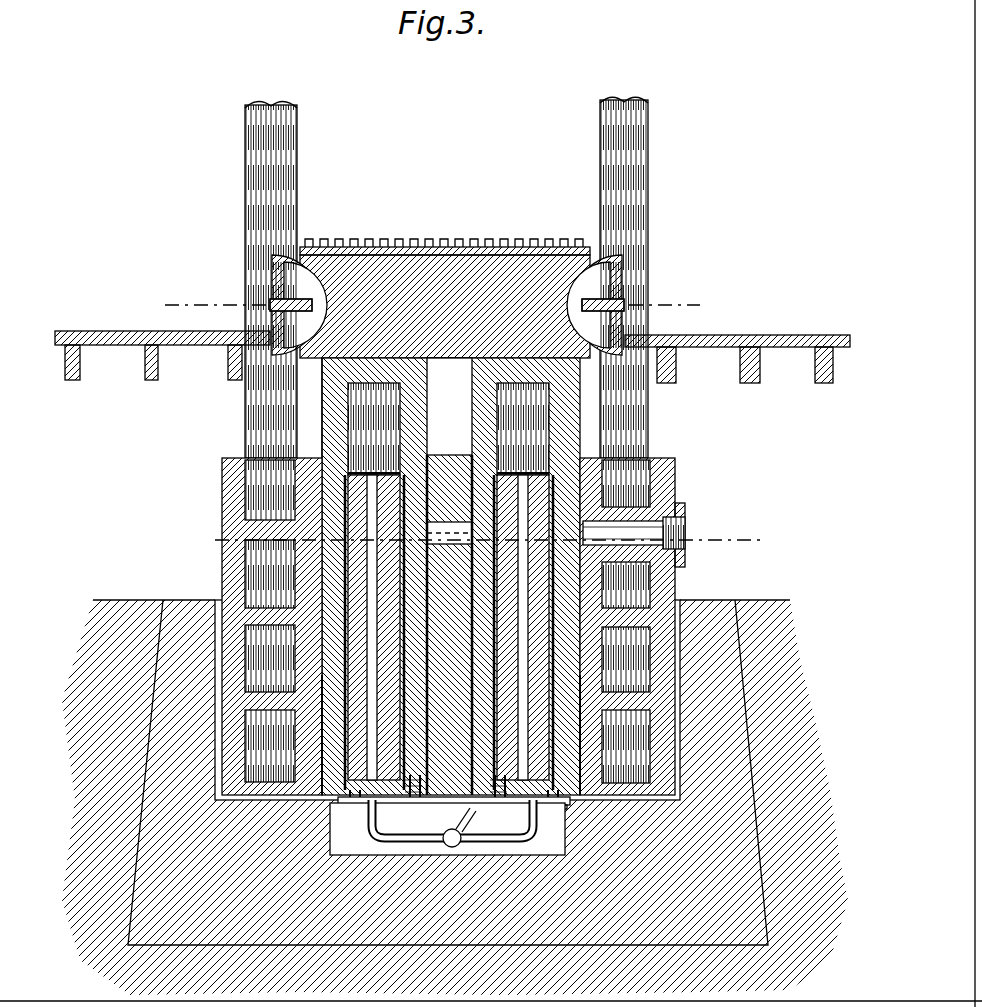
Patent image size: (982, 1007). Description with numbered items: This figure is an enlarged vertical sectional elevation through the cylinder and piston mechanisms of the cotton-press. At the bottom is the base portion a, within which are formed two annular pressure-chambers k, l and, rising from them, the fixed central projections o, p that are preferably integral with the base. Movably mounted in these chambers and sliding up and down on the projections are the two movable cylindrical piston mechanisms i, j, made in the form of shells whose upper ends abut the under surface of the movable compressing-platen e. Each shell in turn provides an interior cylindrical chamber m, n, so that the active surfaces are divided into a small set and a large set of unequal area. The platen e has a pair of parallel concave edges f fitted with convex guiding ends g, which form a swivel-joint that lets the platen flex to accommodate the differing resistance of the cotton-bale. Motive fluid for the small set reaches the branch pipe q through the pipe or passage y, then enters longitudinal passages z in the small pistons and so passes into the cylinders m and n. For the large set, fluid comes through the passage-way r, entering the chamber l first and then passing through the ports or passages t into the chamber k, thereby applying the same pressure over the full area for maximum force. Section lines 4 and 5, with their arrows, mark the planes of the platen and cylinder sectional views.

The base portion a is at (222, 570).
The movable compressing-platen e is at (445, 298).
The concave edges f is at (447, 305).
The convex guiding ends g is at (292, 270).
The movable cylindrical piston mechanism i is at (322, 672).
The movable cylindrical piston mechanism j is at (626, 621).
The annular pressure-chamber k is at (330, 720).
The annular pressure-chamber l is at (450, 524).
The interior cylindrical chamber m is at (374, 586).
The interior cylindrical chamber n is at (523, 586).
The fixed central projection o is at (455, 797).
The fixed central projection p is at (548, 748).
The pipe q is at (365, 826).
The passage-way r is at (678, 530).
The ports or passages t is at (449, 625).
The pipe or passage y is at (452, 817).
The longitudinal passages z is at (448, 458).
The section line 4 is at (695, 265).
The section line 5 is at (752, 498).